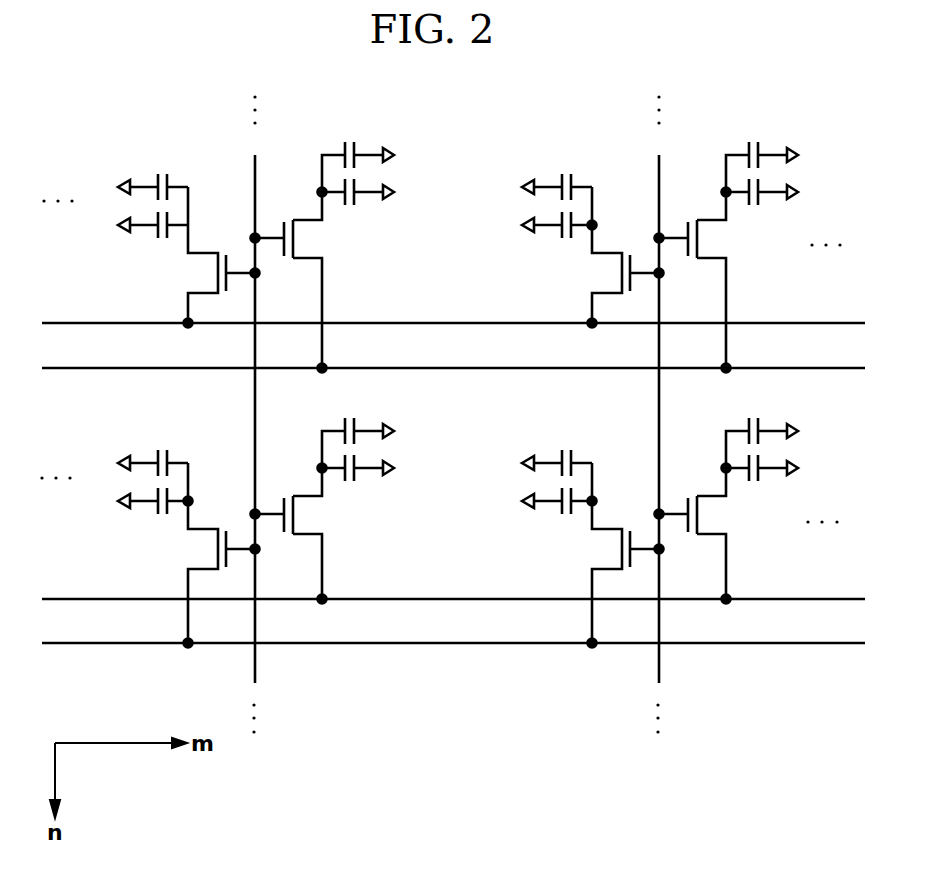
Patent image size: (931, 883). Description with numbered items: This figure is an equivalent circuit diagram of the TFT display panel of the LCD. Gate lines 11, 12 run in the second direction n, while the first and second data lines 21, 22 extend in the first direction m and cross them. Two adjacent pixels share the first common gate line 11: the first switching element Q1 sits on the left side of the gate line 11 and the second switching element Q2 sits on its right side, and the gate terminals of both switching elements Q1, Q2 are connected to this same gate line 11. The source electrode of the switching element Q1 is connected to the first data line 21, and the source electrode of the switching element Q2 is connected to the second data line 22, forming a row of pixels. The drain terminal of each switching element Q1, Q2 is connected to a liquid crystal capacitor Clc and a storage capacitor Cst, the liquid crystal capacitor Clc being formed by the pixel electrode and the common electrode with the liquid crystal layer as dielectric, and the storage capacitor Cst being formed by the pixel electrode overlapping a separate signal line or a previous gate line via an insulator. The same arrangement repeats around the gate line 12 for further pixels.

The first common gate line 11 is at (257, 414).
The gate line 12 is at (661, 414).
The first data line 21 is at (441, 462).
The second data line 22 is at (441, 506).
The first switching element Q1 is at (210, 257).
The second switching element Q2 is at (340, 257).
The storage capacitor Cst is at (137, 187).
The liquid crystal capacitor Clc is at (137, 225).